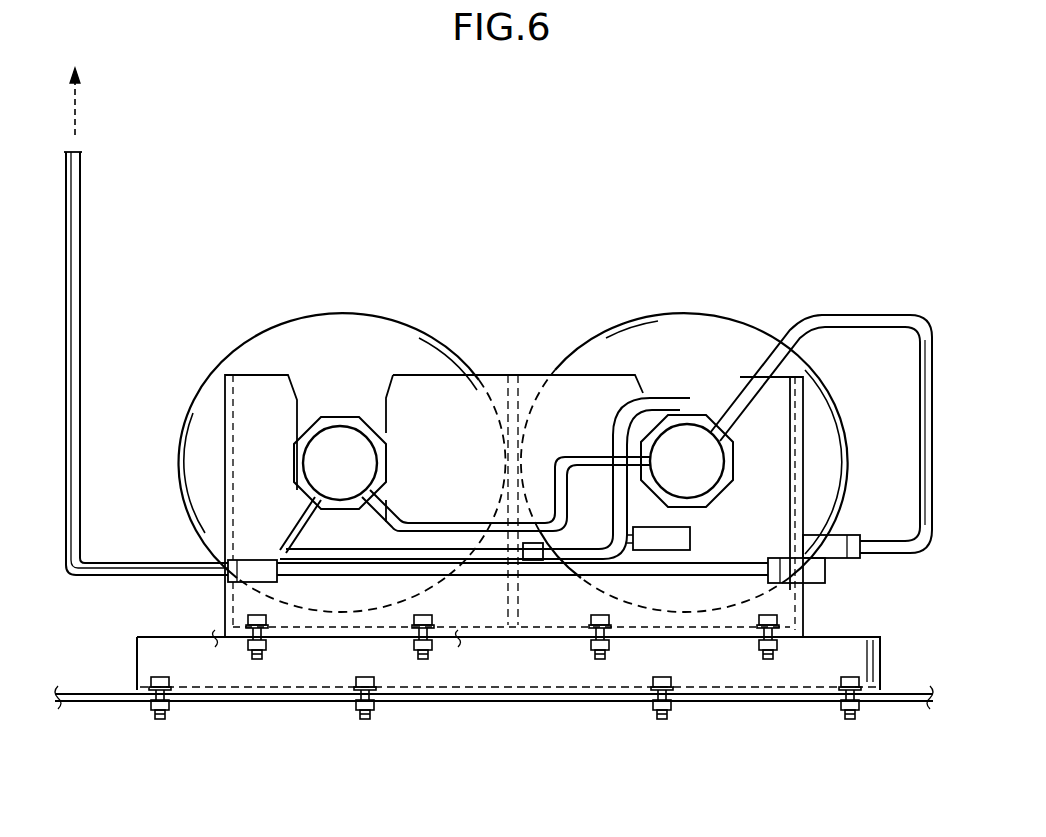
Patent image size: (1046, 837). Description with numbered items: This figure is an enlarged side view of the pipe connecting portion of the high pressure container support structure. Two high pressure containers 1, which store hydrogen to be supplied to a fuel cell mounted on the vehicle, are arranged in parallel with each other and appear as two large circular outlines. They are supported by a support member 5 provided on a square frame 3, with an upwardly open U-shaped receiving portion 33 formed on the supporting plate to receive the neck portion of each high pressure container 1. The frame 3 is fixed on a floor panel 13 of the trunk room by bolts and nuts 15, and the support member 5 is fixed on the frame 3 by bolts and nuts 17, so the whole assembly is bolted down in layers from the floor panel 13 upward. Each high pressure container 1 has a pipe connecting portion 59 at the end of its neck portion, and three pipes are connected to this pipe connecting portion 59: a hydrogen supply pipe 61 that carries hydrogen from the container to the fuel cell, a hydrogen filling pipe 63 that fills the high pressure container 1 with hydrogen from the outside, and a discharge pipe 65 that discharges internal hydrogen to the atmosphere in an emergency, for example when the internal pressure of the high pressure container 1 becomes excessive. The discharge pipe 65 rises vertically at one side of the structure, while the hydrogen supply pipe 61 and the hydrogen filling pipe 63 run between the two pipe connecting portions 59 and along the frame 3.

The high pressure container 1 is at (341, 320).
The frame 3 is at (495, 678).
The support member 5 is at (255, 383).
The floor panel 13 is at (100, 690).
The bolts and nuts 15 is at (160, 720).
The bolts and nuts 17 is at (255, 660).
The receiving portion 33 is at (368, 393).
The pipe connecting portion 59 is at (345, 445).
The hydrogen supply pipe 61 is at (588, 553).
The hydrogen filling pipe 63 is at (457, 523).
The discharge pipe 65 is at (82, 228).